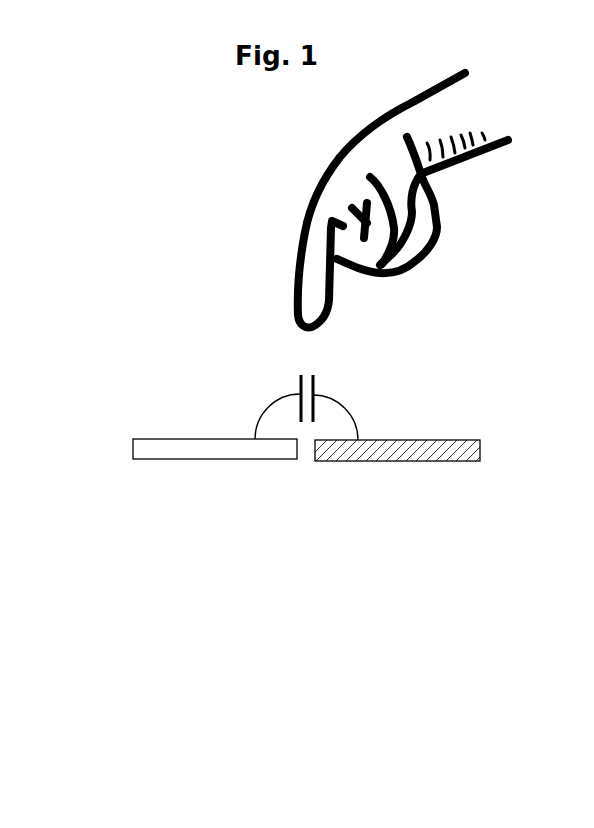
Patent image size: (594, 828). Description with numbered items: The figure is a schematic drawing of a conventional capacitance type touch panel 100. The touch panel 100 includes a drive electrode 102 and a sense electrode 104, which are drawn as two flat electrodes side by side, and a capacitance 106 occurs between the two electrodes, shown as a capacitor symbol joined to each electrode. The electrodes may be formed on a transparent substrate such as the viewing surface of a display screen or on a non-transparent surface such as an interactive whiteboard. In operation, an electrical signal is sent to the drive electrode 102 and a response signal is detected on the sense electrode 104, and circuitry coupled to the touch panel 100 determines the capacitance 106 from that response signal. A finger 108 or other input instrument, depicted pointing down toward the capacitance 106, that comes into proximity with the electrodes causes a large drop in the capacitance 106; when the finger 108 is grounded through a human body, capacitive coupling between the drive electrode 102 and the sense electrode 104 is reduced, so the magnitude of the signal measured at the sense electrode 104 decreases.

The touch panel 100 is at (342, 425).
The drive electrode 102 is at (182, 439).
The sense electrode 104 is at (463, 450).
The capacitance 106 is at (285, 385).
The finger 108 is at (288, 303).